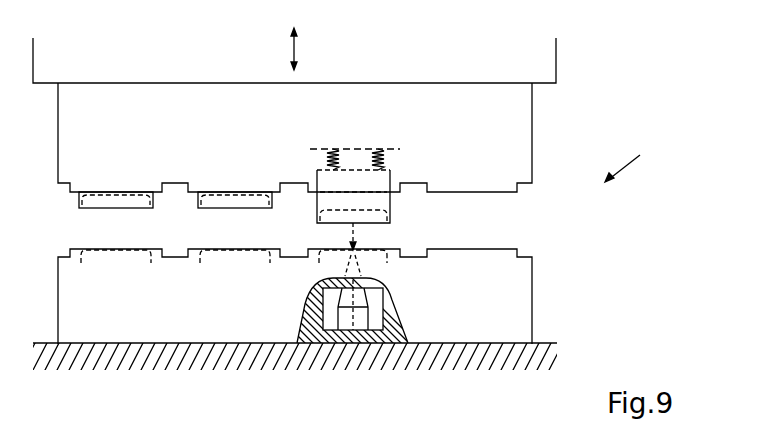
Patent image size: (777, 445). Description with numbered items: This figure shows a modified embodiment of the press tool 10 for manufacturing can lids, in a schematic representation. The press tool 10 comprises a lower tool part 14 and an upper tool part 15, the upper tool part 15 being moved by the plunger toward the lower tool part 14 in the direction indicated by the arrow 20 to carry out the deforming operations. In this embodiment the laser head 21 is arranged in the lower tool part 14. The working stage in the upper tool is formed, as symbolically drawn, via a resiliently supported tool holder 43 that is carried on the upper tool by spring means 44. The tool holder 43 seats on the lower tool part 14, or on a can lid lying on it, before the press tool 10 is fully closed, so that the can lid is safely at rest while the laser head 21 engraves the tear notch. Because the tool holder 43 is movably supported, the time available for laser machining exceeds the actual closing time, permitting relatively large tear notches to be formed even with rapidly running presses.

The press tool 10 is at (637, 163).
The lower tool part 14 is at (532, 292).
The upper tool part 15 is at (532, 138).
The arrow 20 is at (296, 45).
The laser head 21 is at (377, 312).
The tool holder 43 is at (390, 208).
The spring means 44 is at (392, 160).